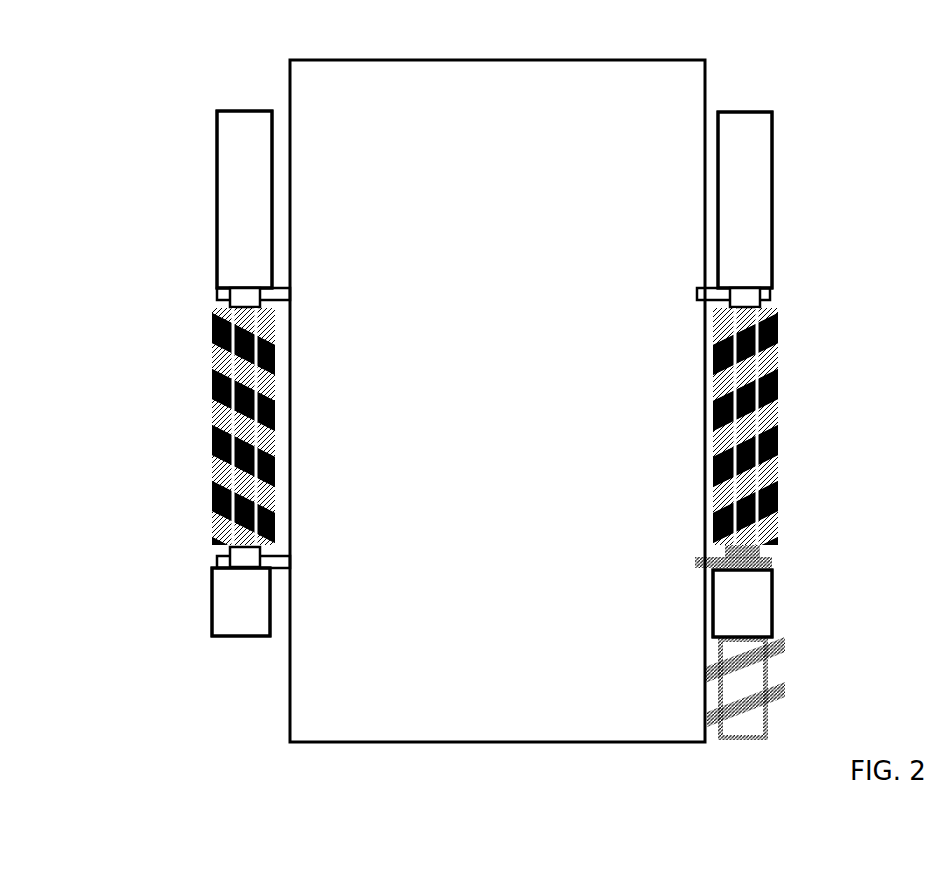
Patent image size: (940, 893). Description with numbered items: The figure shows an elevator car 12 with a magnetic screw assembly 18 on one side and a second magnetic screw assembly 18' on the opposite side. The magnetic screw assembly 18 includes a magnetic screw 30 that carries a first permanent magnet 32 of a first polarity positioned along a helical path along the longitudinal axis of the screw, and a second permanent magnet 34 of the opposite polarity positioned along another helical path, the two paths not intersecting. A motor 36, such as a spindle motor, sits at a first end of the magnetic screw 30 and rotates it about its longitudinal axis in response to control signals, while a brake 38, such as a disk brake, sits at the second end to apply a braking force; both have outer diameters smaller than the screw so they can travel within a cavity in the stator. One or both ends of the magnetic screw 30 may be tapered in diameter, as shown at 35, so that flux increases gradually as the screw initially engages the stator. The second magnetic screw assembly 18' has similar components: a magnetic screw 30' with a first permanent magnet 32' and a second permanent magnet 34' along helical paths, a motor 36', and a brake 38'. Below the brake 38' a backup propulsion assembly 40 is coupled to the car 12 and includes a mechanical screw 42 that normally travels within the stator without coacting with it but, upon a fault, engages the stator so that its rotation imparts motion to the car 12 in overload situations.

The elevator car 12 is at (497, 401).
The magnetic screw assembly 18 is at (181, 348).
The second magnetic screw assembly 18' is at (815, 354).
The magnetic screw 30 is at (181, 453).
The magnetic screw 30' is at (794, 453).
The first permanent magnet 32 is at (187, 426).
The first permanent magnet 32' is at (795, 411).
The second permanent magnet 34 is at (187, 453).
The second permanent magnet 34' is at (795, 453).
The tapered end 35 is at (210, 305).
The motor 36 is at (187, 199).
The motor 36' is at (789, 209).
The brake 38 is at (185, 597).
The brake 38' is at (791, 591).
The backup propulsion assembly 40 is at (775, 732).
The mechanical screw 42 is at (775, 675).